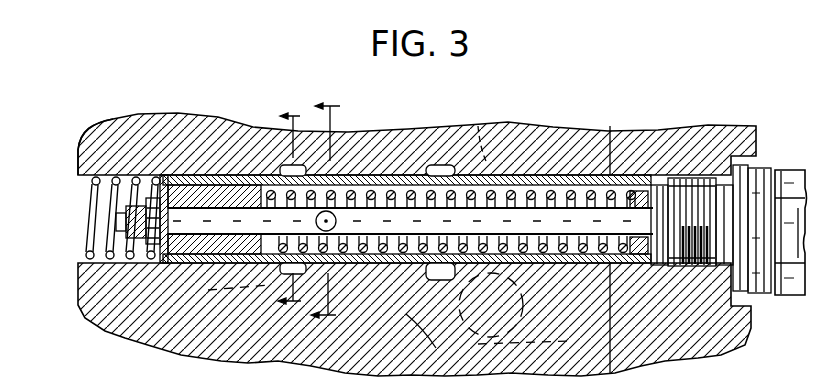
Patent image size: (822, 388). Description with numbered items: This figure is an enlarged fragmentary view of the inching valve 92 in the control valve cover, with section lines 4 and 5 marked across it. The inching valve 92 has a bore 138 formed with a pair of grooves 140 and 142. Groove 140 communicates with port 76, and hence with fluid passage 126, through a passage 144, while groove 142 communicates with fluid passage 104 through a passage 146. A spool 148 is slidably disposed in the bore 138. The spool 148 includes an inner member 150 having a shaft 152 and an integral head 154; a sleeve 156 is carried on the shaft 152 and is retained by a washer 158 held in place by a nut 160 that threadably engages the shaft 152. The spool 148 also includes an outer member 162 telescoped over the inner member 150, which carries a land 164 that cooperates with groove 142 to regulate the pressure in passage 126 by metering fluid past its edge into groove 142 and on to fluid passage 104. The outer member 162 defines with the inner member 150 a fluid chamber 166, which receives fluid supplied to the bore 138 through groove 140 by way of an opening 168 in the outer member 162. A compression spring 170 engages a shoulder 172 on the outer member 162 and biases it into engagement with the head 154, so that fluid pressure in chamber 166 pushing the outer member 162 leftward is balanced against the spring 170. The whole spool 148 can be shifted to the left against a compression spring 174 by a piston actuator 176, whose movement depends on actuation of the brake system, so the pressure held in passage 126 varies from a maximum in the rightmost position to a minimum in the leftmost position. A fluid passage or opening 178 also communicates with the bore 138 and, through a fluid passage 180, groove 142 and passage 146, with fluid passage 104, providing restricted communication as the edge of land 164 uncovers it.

The inching valve 92 is at (221, 101).
The sleeve 156 is at (158, 172).
The bore 138 is at (190, 166).
The groove 142 is at (280, 157).
The section line 4 is at (289, 211).
The section line 5 is at (325, 211).
The land 164 is at (350, 167).
The groove 140 is at (430, 157).
The opening 168 is at (462, 183).
The fluid passage 126 is at (489, 110).
The outer member 162 is at (568, 167).
The spool 148 is at (640, 172).
The head 154 is at (690, 127).
The piston actuator 176 is at (787, 167).
The compression spring 174 is at (80, 168).
The nut 160 is at (76, 233).
The shaft 152 is at (210, 213).
The fluid passage 180 is at (268, 213).
The fluid passage or opening 178 is at (360, 213).
The compression spring 170 is at (523, 203).
The shoulder 172 is at (640, 206).
The washer 158 is at (152, 250).
The inner member 150 is at (417, 244).
The passage 146 is at (268, 290).
The fluid passage 104 is at (117, 330).
The fluid chamber 166 is at (374, 288).
The passage 144 is at (412, 326).
The port 76 is at (518, 327).